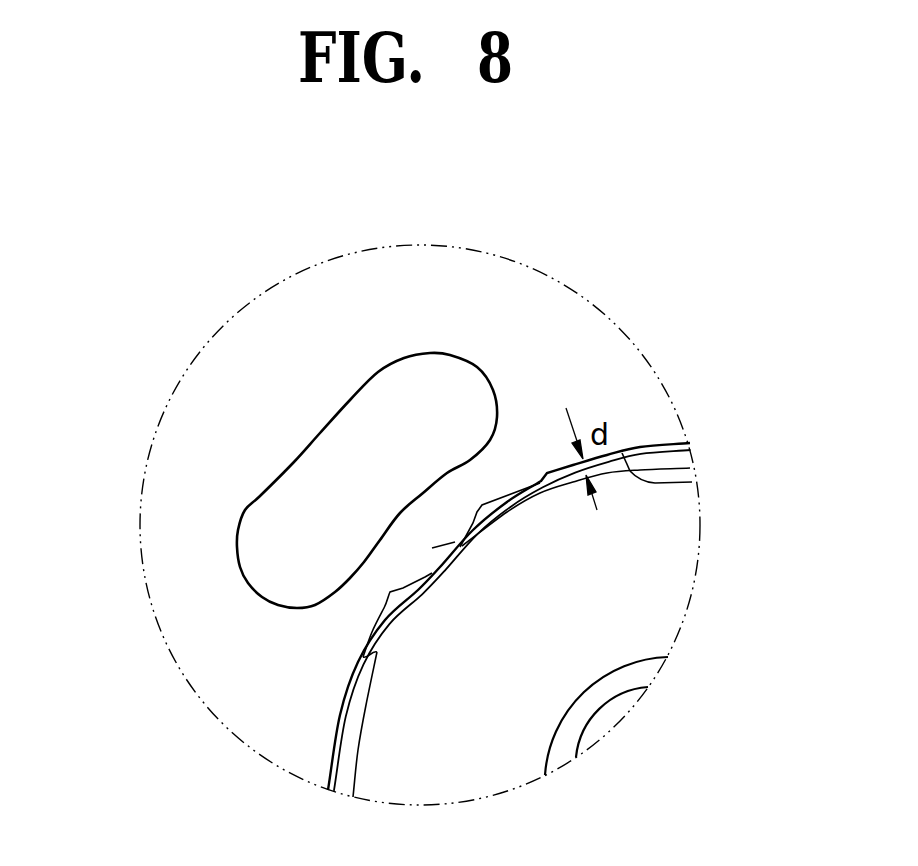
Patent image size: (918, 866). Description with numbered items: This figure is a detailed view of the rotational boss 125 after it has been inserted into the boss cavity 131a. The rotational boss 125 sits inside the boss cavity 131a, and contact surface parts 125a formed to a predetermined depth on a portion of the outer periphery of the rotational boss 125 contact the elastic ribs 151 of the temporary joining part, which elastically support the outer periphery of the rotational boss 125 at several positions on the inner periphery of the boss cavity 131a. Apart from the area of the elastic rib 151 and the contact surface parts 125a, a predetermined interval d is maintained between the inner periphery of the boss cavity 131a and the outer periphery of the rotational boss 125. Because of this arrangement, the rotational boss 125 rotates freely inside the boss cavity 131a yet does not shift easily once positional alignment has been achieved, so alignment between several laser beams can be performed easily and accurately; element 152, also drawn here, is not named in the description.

The rotational boss 125 is at (647, 605).
The contact surface parts 125a is at (413, 613).
The boss cavity 131a is at (692, 482).
The elastic ribs 151 is at (430, 550).
The cam lever 152 is at (386, 412).